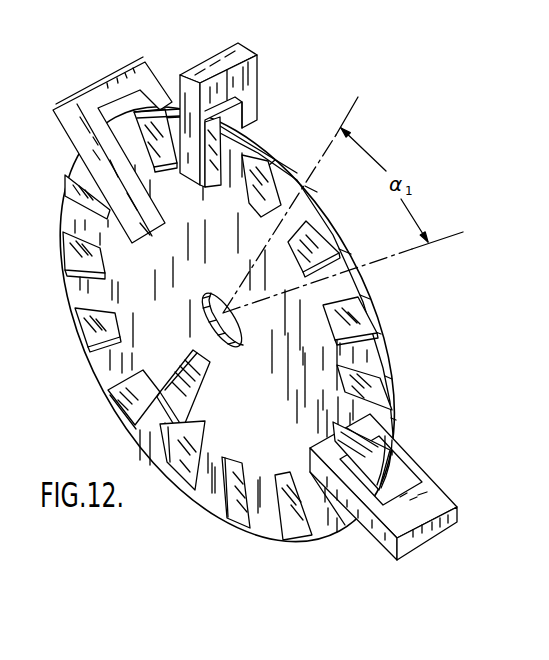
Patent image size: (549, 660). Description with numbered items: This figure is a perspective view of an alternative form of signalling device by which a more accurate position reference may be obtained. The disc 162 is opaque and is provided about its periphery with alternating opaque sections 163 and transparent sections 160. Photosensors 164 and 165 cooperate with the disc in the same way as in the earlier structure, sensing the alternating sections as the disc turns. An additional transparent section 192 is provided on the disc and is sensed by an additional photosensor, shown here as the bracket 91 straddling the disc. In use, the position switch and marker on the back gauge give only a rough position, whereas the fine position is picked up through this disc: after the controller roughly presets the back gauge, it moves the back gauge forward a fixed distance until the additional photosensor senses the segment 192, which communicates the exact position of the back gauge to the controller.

The sensor bracket 91 is at (103, 84).
The transparent sections 160 is at (405, 352).
The disc 162 is at (208, 507).
The opaque sections 163 is at (100, 365).
The photosensor 164 is at (243, 72).
The photosensor 165 is at (433, 497).
The additional transparent section 192 is at (190, 383).